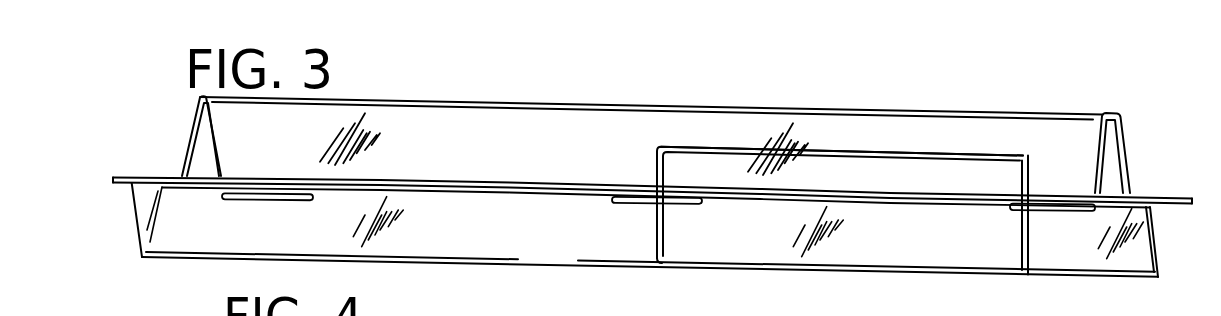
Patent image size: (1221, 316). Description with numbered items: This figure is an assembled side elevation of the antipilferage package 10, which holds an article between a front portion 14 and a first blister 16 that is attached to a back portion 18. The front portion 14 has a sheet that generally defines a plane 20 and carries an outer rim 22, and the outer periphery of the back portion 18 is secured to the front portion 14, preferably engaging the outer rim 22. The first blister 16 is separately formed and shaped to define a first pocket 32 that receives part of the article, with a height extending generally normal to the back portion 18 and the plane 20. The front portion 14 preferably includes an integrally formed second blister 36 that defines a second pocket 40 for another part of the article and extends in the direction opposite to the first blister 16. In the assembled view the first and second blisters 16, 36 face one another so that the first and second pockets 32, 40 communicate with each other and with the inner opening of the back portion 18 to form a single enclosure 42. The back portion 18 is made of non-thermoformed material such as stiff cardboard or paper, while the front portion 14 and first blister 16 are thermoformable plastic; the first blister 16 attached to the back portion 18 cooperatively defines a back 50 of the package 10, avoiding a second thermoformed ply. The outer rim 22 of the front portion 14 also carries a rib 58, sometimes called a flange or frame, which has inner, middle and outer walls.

The antipilferage package 10 is at (535, 60).
The front portion 14 is at (643, 127).
The first blister 16 is at (1033, 253).
The back portion 18 is at (518, 193).
The plane 20 is at (572, 182).
The outer rim 22 is at (247, 177).
The first pocket 32 is at (951, 256).
The second blister 36 is at (897, 147).
The second pocket 40 is at (877, 185).
The enclosure 42 is at (705, 172).
The back 50 is at (568, 190).
The rib 58 is at (140, 244).